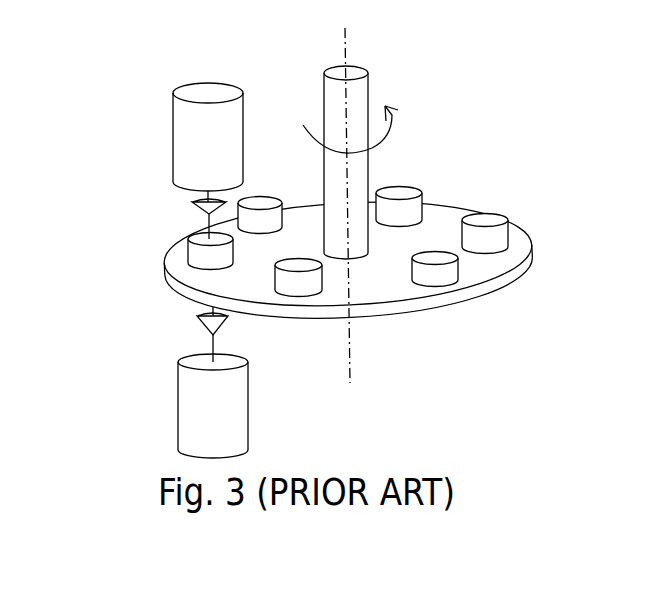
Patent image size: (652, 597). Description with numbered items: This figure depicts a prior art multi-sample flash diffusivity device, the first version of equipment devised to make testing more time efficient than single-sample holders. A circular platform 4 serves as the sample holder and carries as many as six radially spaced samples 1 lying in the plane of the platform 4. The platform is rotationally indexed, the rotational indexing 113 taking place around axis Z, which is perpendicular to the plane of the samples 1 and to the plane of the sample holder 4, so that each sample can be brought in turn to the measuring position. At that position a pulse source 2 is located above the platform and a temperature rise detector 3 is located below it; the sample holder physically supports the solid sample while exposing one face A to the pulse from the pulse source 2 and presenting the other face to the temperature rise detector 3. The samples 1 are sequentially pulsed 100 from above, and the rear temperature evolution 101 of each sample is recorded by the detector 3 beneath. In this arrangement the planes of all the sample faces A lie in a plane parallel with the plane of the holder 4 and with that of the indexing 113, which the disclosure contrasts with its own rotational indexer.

The samples 1 is at (200, 255).
The pulse source 2 is at (190, 137).
The temperature rise detector 3 is at (198, 413).
The circular platform 4 is at (510, 265).
The pulse 100 is at (193, 205).
The rear temperature evolution 101 is at (200, 321).
The rotational indexing 113 is at (397, 112).
The sample face A is at (200, 238).
The axis Z is at (359, 205).